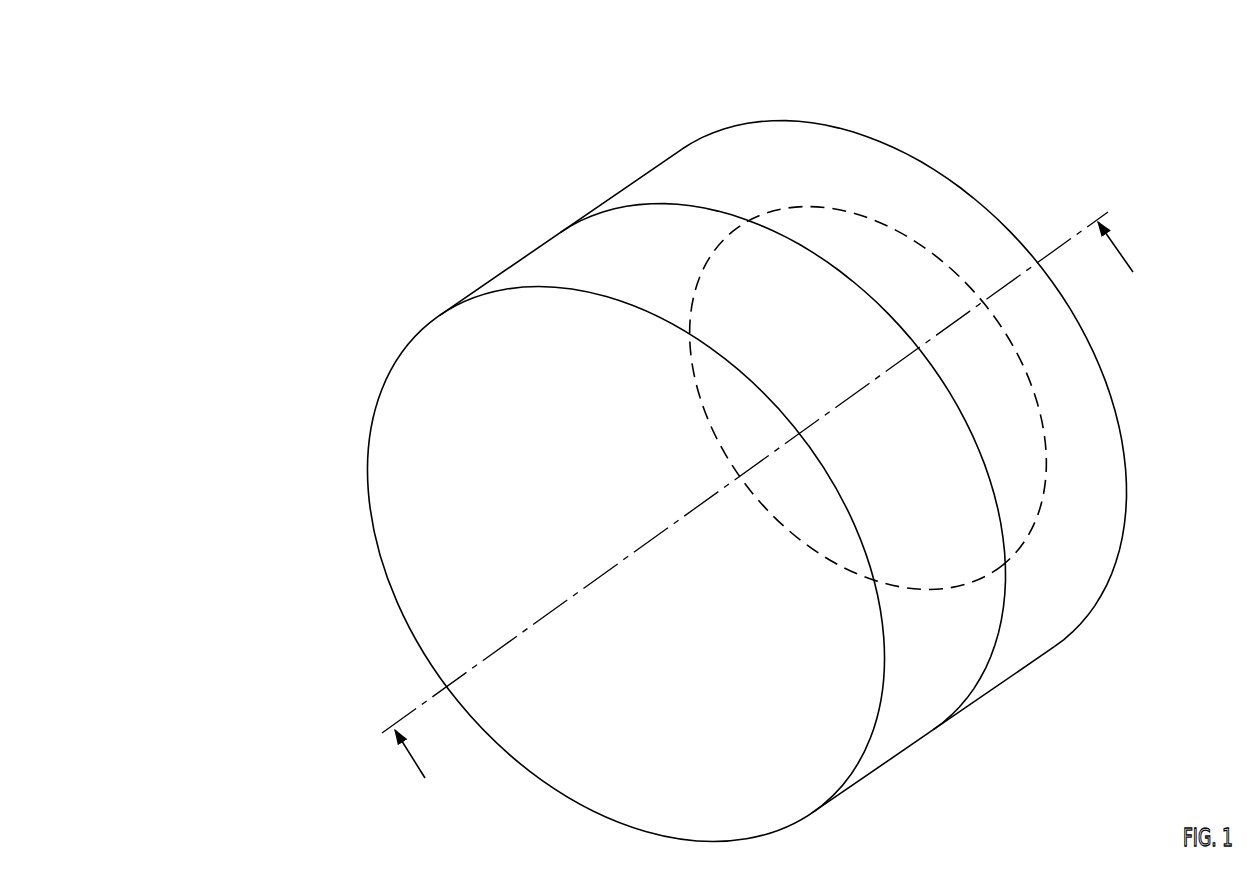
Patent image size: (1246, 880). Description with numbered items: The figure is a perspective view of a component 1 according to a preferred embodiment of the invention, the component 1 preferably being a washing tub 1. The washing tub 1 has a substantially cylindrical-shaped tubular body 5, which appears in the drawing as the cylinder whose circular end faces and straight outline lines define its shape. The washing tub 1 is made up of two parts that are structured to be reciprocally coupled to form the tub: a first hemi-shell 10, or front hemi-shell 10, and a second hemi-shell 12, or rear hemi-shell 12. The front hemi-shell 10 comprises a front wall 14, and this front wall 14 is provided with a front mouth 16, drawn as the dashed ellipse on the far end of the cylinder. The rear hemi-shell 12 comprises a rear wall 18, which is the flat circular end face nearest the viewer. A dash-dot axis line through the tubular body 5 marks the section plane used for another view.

The component 1 is at (272, 231).
The first hemi-shell 10 is at (634, 133).
The tubular body 5 is at (550, 240).
The second hemi-shell 12 is at (440, 266).
The front wall 14 is at (945, 207).
The front mouth 16 is at (834, 210).
The rear wall 18 is at (415, 544).